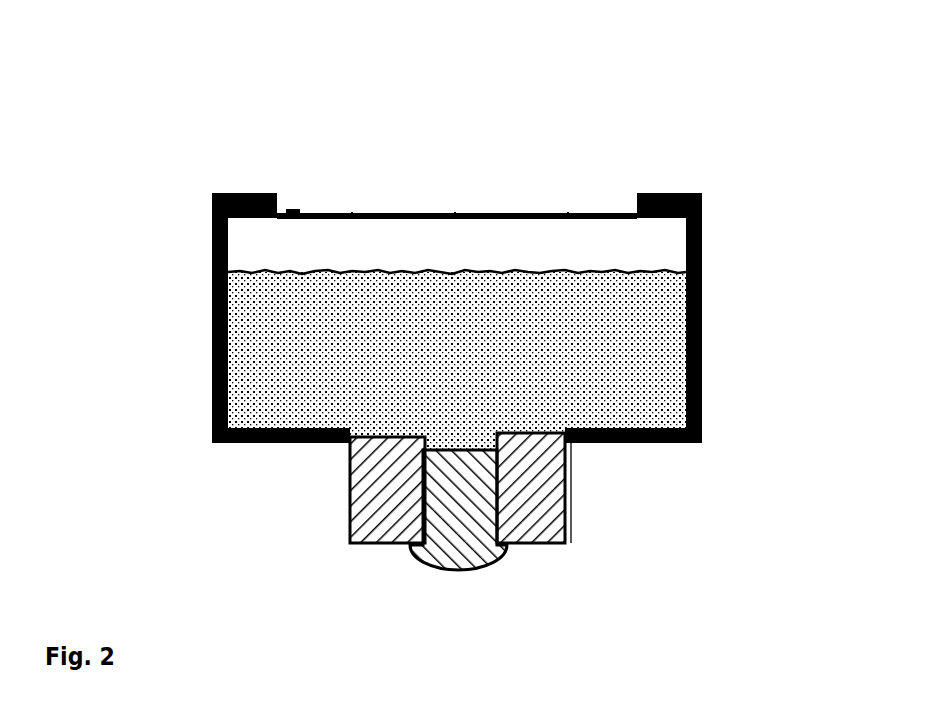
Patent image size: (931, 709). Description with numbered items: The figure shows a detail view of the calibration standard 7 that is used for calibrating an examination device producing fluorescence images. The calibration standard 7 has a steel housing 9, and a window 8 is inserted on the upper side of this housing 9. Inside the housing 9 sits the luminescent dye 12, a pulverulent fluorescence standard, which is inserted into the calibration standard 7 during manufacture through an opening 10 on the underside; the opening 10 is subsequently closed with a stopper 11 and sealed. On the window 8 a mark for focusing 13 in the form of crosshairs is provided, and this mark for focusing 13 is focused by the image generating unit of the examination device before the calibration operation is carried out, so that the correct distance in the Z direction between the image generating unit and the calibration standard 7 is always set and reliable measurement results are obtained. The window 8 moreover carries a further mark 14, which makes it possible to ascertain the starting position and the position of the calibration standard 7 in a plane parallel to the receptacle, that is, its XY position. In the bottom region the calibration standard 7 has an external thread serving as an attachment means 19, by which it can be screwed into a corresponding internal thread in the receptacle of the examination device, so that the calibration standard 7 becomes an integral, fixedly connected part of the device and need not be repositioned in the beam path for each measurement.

The calibration standard 7 is at (266, 110).
The window 8 is at (597, 213).
The steel housing 9 is at (701, 350).
The opening 10 is at (503, 515).
The stopper 11 is at (477, 568).
The luminescent dye 12 is at (620, 300).
The mark for focusing 13 is at (352, 213).
The further mark 14 is at (300, 213).
The attachment means 19 is at (568, 502).